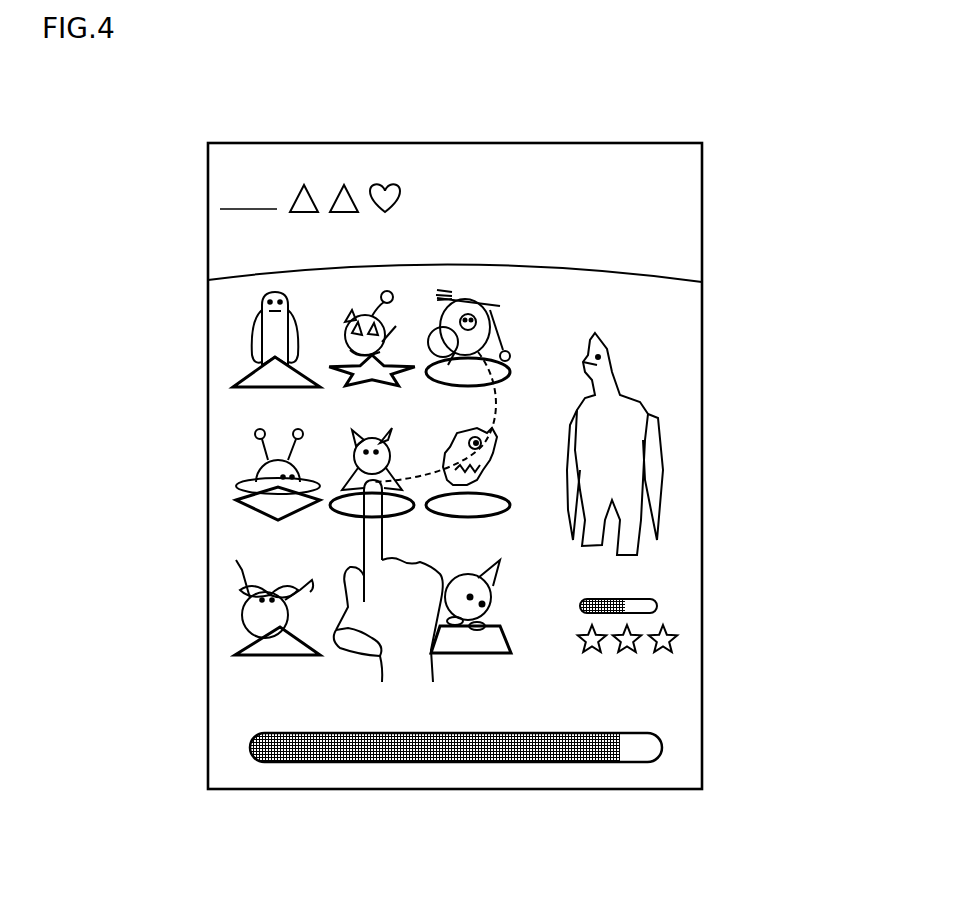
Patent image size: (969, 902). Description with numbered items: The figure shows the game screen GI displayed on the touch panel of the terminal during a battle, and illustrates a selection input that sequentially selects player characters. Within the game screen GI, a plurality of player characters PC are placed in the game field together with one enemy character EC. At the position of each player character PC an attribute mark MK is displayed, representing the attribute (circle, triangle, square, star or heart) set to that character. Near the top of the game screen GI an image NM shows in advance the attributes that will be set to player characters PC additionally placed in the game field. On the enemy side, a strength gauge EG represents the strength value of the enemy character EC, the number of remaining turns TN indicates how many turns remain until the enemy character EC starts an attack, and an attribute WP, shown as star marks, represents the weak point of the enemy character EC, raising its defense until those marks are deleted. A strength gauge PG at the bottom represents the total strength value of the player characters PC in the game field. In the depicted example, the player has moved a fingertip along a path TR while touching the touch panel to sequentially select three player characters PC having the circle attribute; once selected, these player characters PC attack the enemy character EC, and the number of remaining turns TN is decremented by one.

The game screen GI is at (562, 128).
The image representing attribute to be set NM is at (348, 165).
The player character PC is at (276, 290).
The attribute mark MK is at (255, 387).
The path TR is at (496, 401).
The enemy character EC is at (597, 332).
The number of remaining turns TN is at (690, 583).
The strength gauge of enemy character EG is at (658, 606).
The weak point attribute WP is at (690, 645).
The strength gauge of player character PG is at (445, 763).